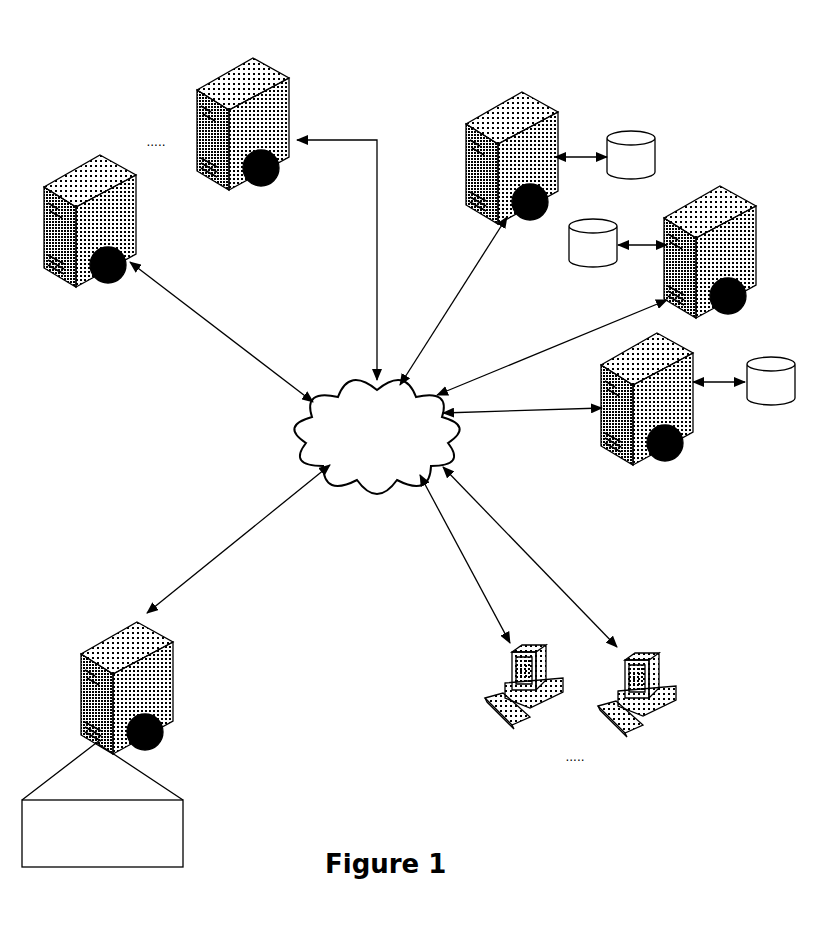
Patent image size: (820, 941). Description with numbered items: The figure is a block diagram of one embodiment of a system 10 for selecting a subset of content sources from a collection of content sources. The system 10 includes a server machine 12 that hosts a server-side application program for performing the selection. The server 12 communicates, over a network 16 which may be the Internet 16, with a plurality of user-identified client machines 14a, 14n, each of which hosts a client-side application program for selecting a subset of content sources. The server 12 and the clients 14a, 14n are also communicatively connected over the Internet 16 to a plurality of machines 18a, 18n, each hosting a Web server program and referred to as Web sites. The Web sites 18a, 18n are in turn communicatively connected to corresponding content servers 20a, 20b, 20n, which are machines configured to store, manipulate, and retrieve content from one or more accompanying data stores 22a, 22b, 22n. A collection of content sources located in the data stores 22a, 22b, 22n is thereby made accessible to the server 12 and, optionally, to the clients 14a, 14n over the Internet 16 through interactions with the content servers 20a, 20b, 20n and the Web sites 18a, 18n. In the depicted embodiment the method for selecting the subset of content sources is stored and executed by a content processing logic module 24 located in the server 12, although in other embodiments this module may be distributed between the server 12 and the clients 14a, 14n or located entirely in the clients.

The system 10 is at (661, 809).
The server machine 12 is at (196, 691).
The user-identified machine 14a is at (475, 768).
The user-identified machine 14n is at (633, 768).
The network 16 is at (378, 521).
The Web site machine 18a is at (68, 136).
The Web site machine 18n is at (188, 41).
The content server 20a is at (478, 85).
The content server 20b is at (772, 258).
The content server 20n is at (650, 485).
The data store 22a is at (617, 118).
The data store 22b is at (575, 308).
The data store 22n is at (763, 436).
The content processing logic module 24 is at (137, 855).